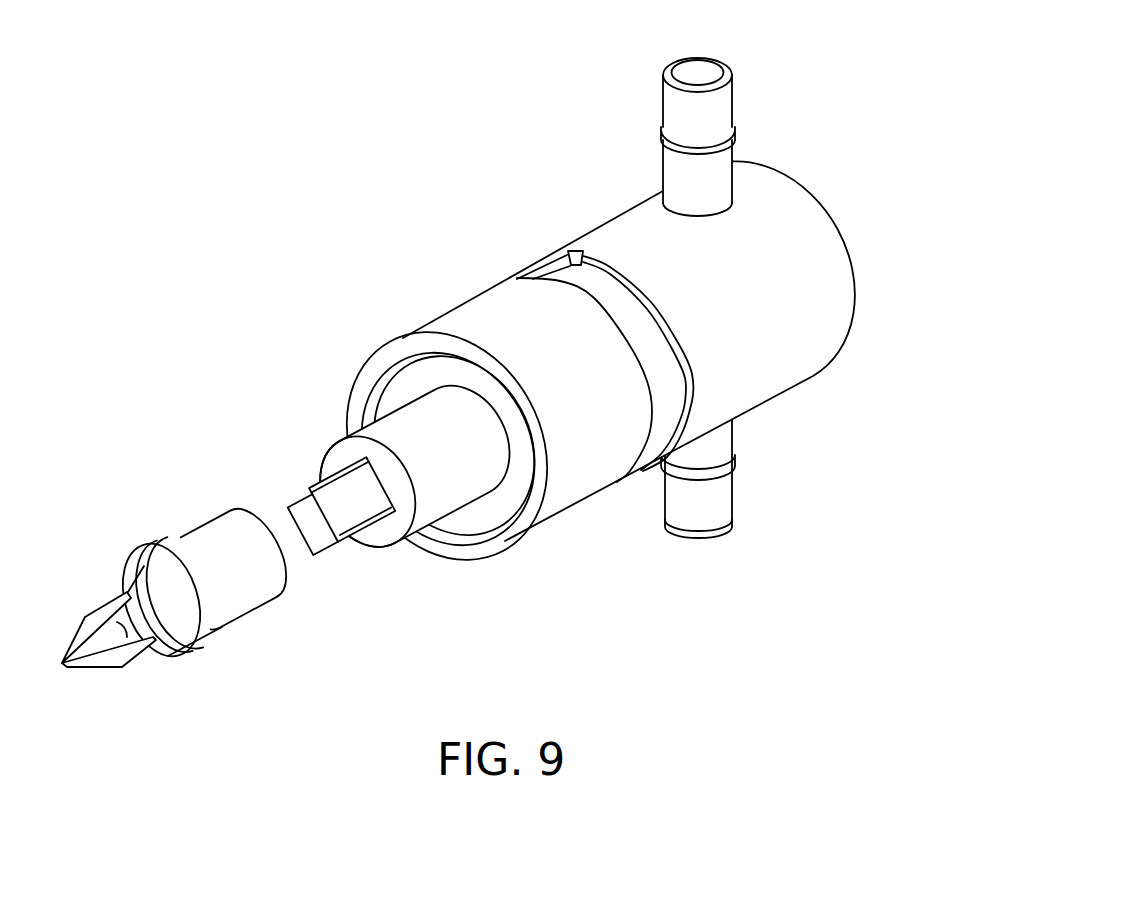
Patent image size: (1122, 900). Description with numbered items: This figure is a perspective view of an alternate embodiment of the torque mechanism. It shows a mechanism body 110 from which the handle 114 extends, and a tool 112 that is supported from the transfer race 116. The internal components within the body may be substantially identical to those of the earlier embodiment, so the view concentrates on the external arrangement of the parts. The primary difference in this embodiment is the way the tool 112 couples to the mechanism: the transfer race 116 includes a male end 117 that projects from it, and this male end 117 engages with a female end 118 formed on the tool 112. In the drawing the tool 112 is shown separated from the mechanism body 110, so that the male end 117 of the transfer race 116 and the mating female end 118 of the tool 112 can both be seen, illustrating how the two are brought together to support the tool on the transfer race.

The mechanism body 110 is at (468, 301).
The tool 112 is at (196, 606).
The handle 114 is at (663, 104).
The transfer race 116 is at (323, 443).
The male end 117 is at (350, 512).
The female end 118 is at (208, 533).